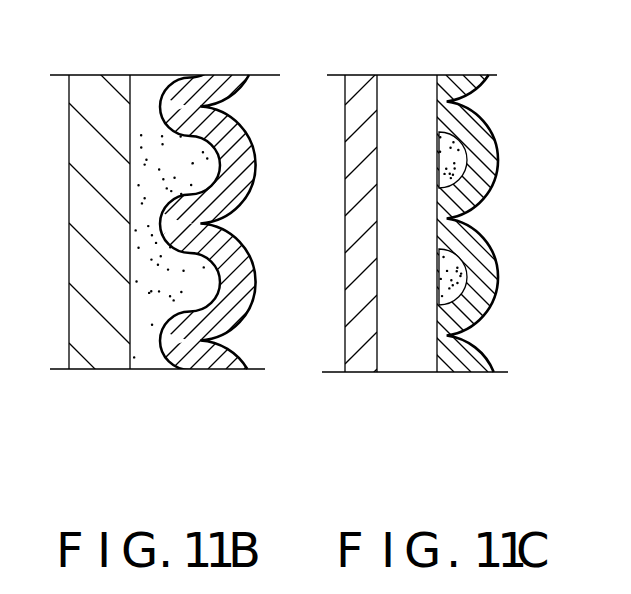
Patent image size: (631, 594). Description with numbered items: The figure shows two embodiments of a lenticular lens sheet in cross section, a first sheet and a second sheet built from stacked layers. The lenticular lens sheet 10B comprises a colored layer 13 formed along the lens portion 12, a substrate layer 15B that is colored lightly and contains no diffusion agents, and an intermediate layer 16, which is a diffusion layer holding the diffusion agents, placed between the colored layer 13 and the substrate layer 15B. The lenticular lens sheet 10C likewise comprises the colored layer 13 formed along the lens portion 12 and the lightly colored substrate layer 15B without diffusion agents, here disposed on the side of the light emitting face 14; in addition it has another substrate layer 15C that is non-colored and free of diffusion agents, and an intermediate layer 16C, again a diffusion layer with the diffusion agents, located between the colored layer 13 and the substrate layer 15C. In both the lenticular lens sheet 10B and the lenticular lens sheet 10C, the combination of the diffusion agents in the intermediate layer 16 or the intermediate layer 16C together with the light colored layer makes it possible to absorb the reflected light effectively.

In FIG. 11B, the lenticular lens sheet 10B is at (220, 25).
In FIG. 11C, the lenticular lens sheet 10C is at (463, 25).
In FIG. 11B, the lens portion 12 is at (266, 166).
In FIG. 11C, the lens portion 12 is at (515, 160).
In FIG. 11B, the colored layer 13 is at (205, 362).
In FIG. 11C, the colored layer 13 is at (460, 365).
In FIG. 11B, the light emitting face 14 is at (69, 230).
In FIG. 11C, the light emitting face 14 is at (345, 228).
In FIG. 11B, the substrate layer 15B is at (90, 357).
In FIG. 11C, the substrate layer 15B is at (362, 360).
In FIG. 11C, the substrate layer 15C is at (407, 360).
In FIG. 11B, the intermediate layer (diffusion layer) 16 is at (153, 360).
In FIG. 11C, the intermediate layer (diffusion layer) 16C is at (455, 277).